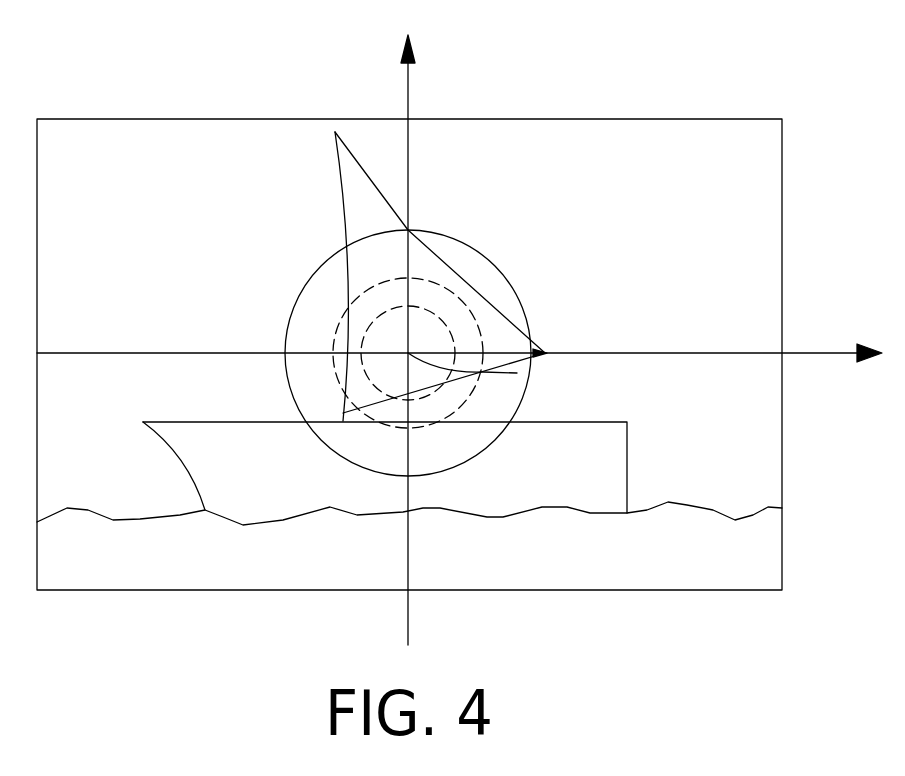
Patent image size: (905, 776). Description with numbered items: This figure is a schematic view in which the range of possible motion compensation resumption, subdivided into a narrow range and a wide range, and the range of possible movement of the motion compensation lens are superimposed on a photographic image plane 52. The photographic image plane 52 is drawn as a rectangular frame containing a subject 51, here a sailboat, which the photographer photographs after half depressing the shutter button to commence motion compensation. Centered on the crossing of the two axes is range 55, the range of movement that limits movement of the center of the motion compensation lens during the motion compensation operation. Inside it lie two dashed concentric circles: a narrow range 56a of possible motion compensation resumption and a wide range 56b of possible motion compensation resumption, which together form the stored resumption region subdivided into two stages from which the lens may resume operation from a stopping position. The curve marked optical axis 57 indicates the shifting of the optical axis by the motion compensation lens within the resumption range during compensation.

The subject 51 is at (341, 161).
The photographic image plane 52 is at (568, 119).
The range of possible movement 55 is at (532, 328).
The narrow range of possible motion compensation resumption 56a is at (448, 325).
The wide range of possible motion compensation resumption 56b is at (443, 282).
The optical axis 57 is at (517, 373).